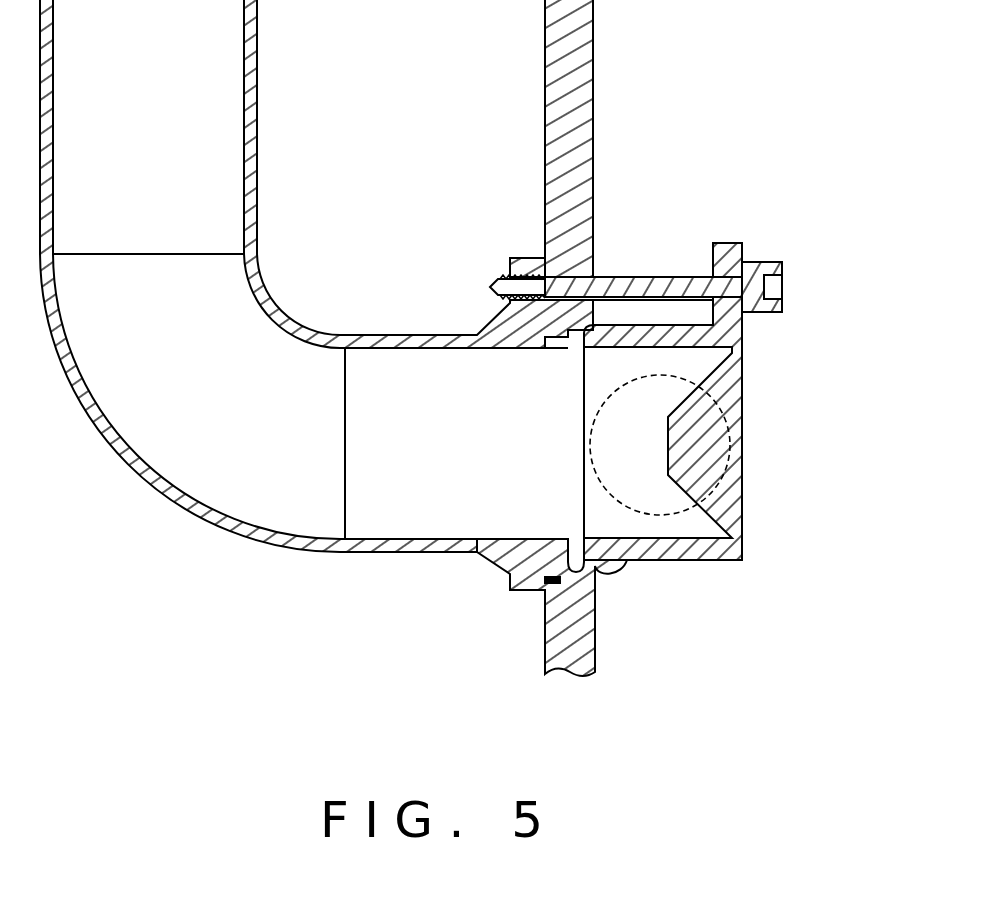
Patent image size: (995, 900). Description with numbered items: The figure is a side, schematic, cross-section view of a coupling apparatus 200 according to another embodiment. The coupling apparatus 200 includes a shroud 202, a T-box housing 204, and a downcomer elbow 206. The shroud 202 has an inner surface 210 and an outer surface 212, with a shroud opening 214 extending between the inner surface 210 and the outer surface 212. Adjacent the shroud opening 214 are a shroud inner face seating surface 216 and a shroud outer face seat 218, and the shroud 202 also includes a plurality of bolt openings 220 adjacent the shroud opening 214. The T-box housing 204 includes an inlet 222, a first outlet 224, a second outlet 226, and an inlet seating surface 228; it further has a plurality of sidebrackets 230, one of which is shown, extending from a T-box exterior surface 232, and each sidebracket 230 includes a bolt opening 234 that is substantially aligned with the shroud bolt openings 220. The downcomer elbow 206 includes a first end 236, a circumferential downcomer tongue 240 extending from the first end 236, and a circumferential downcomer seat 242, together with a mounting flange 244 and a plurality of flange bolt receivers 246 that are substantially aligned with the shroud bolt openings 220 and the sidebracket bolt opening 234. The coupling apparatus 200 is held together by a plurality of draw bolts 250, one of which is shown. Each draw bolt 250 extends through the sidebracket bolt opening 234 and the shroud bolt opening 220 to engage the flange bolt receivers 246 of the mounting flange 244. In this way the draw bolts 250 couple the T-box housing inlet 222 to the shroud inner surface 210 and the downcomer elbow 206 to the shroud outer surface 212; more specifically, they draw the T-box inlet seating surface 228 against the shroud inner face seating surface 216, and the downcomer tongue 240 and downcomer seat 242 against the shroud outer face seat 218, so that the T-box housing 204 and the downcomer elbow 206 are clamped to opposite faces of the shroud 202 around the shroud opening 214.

The coupling apparatus 200 is at (444, 705).
The shroud 202 is at (577, 673).
The T-box housing 204 is at (742, 497).
The downcomer elbow 206 is at (148, 488).
The inner surface 210 is at (608, 639).
The outer surface 212 is at (538, 664).
The shroud opening 214 is at (578, 517).
The shroud inner face seating surface 216 is at (592, 584).
The shroud outer face seat 218 is at (538, 602).
The bolt openings 220 is at (568, 275).
The inlet 222 is at (583, 470).
The first outlet 224 is at (730, 370).
The second outlet 226 is at (700, 446).
The inlet seating surface 228 is at (730, 553).
The sidebracket 230 is at (720, 243).
The T-box exterior surface 232 is at (683, 325).
The sidebracket bolt opening 234 is at (733, 243).
The first end 236 is at (503, 594).
The circumferential downcomer tongue 240 is at (560, 585).
The circumferential downcomer seat 242 is at (497, 562).
The mounting flange 244 is at (527, 258).
The flange bolt receivers 246 is at (513, 260).
The draw bolts 250 is at (790, 288).